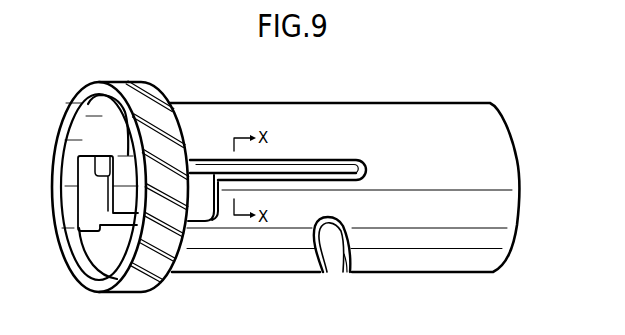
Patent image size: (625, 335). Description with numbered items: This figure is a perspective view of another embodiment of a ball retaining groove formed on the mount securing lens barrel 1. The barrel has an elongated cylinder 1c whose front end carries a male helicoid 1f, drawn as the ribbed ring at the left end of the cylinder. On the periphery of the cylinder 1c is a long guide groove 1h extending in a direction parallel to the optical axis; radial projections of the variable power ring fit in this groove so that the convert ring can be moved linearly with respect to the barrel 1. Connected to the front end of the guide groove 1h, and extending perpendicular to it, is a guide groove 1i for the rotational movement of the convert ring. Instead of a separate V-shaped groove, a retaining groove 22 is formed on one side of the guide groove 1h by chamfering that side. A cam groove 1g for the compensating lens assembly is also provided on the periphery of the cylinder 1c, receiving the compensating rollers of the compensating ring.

The mount securing lens barrel 1 is at (285, 191).
The elongated cylinder 1c is at (474, 110).
The male helicoid 1f is at (137, 79).
The guide groove for rotational movement 1i is at (98, 156).
The guide groove for linear movement 1h is at (278, 155).
The retaining groove 22 is at (339, 174).
The cam groove 1g is at (339, 273).